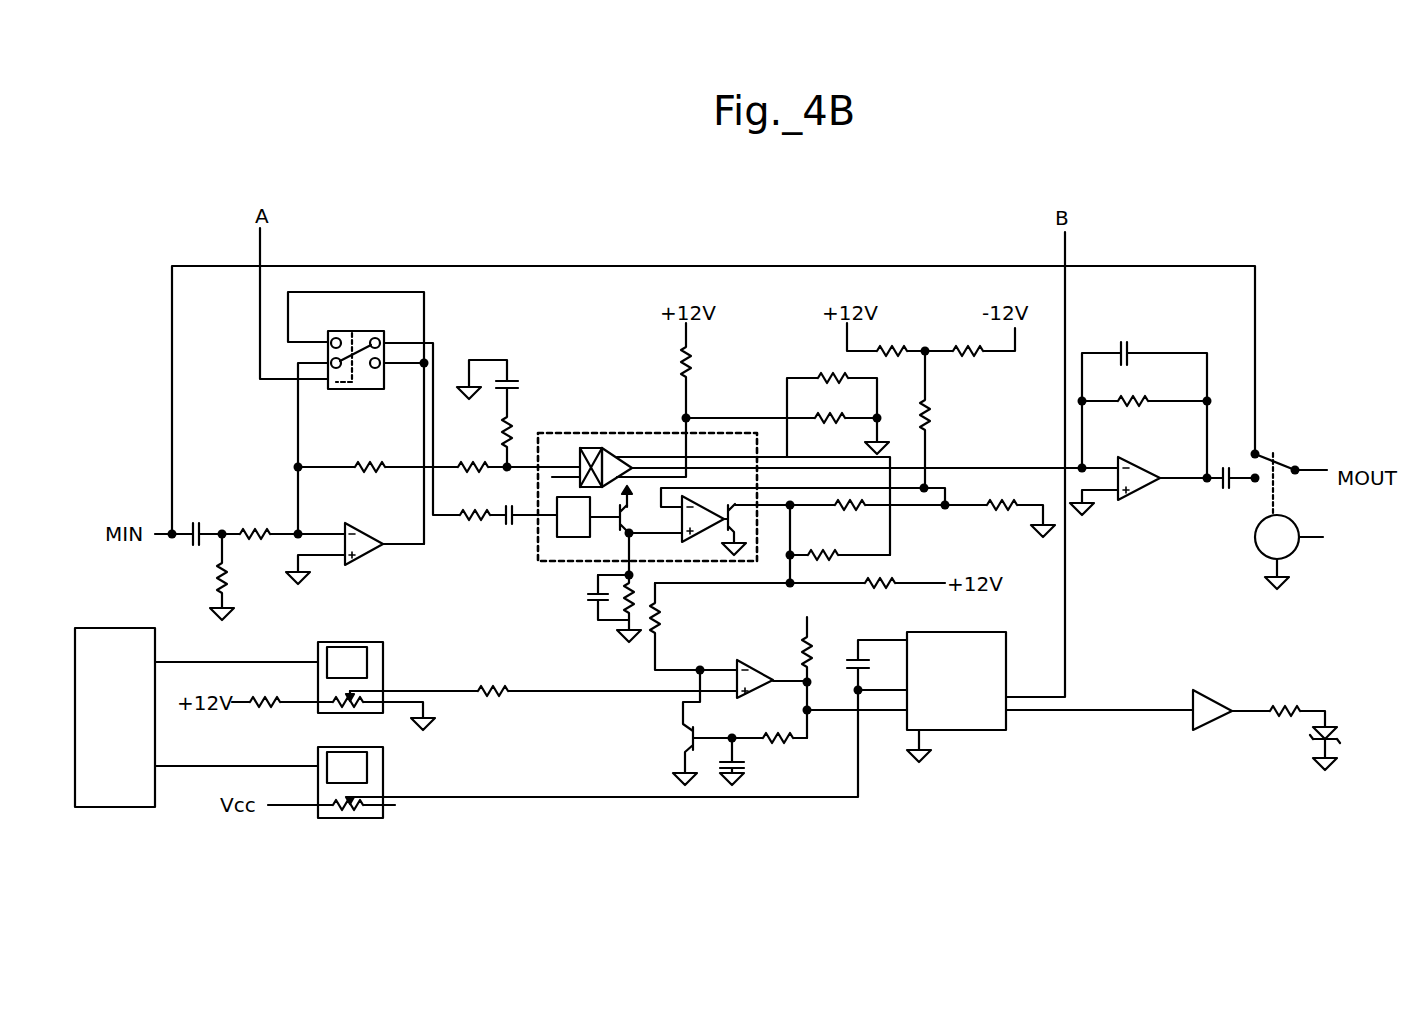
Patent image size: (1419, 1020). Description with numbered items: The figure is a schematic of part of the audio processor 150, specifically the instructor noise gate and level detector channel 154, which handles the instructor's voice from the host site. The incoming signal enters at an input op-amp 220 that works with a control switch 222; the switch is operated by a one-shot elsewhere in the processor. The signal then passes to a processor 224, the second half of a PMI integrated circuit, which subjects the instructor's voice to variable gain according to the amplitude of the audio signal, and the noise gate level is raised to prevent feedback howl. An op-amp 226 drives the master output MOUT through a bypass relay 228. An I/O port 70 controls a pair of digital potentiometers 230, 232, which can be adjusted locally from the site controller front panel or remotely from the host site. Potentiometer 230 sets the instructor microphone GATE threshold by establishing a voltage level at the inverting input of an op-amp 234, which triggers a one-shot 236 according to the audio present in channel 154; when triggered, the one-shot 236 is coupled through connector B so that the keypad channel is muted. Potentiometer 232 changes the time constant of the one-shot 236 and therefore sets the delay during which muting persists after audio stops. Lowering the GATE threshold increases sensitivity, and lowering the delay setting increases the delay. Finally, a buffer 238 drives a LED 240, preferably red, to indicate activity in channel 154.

The audio processor 150 is at (997, 135).
The instructor noise gate and level detector channel 154 is at (108, 437).
The I/O port 70 is at (127, 731).
The input op-amp 220 is at (380, 519).
The control switch 222 is at (340, 389).
The processor 224 is at (613, 433).
The op-amp 226 is at (1137, 490).
The bypass relay 228 is at (1255, 535).
The digital potentiometer 230 is at (384, 644).
The digital potentiometer 232 is at (395, 780).
The op-amp 234 is at (755, 665).
The one-shot 236 is at (982, 688).
The buffer 238 is at (1212, 695).
The LED 240 is at (1337, 732).